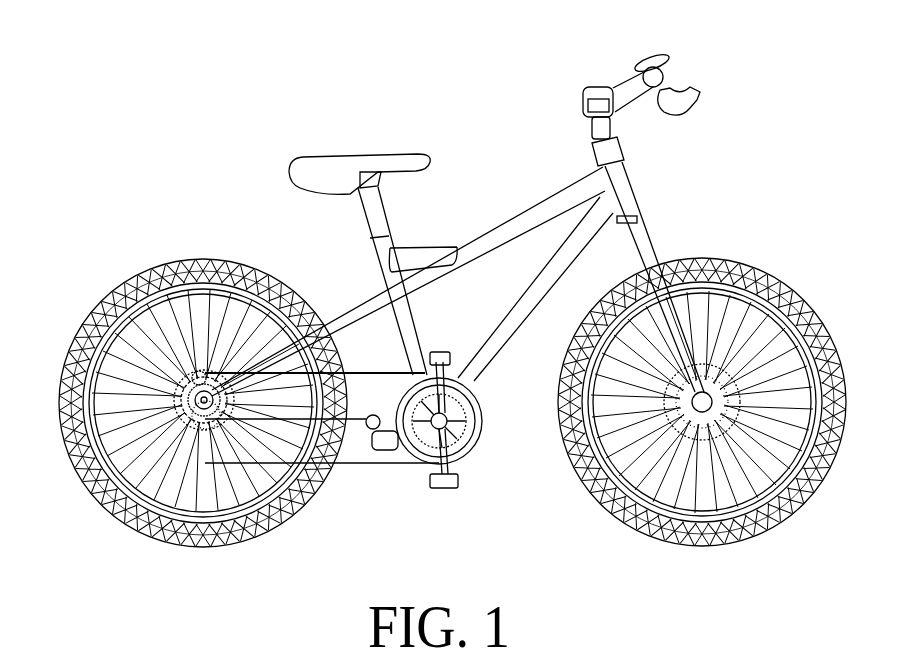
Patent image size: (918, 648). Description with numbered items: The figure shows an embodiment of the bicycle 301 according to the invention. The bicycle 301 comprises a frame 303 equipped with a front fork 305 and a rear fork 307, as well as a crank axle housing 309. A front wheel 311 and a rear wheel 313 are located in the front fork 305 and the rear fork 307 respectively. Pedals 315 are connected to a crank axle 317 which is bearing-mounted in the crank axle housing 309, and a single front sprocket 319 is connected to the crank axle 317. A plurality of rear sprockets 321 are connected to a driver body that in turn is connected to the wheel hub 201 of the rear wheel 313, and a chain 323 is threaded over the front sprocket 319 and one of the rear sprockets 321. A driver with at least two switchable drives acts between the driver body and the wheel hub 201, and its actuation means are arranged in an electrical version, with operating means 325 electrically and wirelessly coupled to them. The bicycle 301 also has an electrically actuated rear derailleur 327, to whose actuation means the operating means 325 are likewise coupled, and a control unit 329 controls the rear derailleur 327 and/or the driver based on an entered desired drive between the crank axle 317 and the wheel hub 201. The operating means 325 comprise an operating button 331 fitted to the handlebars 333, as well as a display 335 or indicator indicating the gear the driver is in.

The wheel hub 201 is at (191, 370).
The bicycle 301 is at (213, 150).
The frame 303 is at (462, 249).
The front fork 305 is at (650, 250).
The rear fork 307 is at (335, 313).
The crank axle housing 309 is at (392, 443).
The front wheel 311 is at (757, 282).
The rear wheel 313 is at (157, 265).
The pedals 315 is at (453, 483).
The crank axle 317 is at (440, 421).
The front sprocket 319 is at (483, 439).
The rear sprockets 321 is at (186, 399).
The chain 323 is at (353, 463).
The operating means 325 is at (673, 80).
The rear derailleur 327 is at (197, 450).
The control unit 329 is at (591, 104).
The operating button 331 is at (670, 65).
The handlebars 333 is at (627, 92).
The display 335 is at (660, 62).